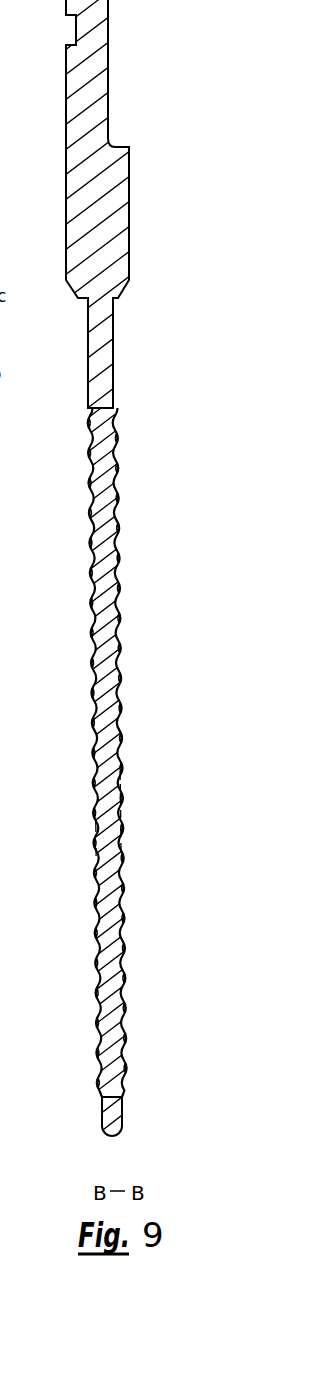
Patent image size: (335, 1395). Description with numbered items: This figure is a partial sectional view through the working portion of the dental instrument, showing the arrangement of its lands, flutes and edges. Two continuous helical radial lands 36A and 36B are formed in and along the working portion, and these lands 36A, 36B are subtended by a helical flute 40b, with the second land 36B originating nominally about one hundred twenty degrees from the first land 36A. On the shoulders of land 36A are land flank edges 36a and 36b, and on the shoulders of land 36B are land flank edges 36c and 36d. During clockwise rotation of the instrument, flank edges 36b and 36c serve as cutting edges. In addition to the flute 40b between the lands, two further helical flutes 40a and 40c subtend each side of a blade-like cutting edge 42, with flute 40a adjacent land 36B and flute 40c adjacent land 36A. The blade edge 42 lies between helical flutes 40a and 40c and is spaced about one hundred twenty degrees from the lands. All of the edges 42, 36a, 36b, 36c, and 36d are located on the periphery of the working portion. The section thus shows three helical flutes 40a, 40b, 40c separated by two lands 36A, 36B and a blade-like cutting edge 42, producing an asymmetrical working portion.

The helical flute 40c is at (119, 758).
The land flank edge 36b is at (118, 772).
The helical radial land 36A is at (119, 787).
The land flank edge 36a is at (119, 795).
The helical flute 40b is at (119, 799).
The helical radial land 36B is at (119, 811).
The helical flute 40a is at (119, 829).
The blade-like cutting edge 42 is at (119, 843).
The land flank edge 36c is at (101, 826).
The land flank edge 36d is at (102, 853).